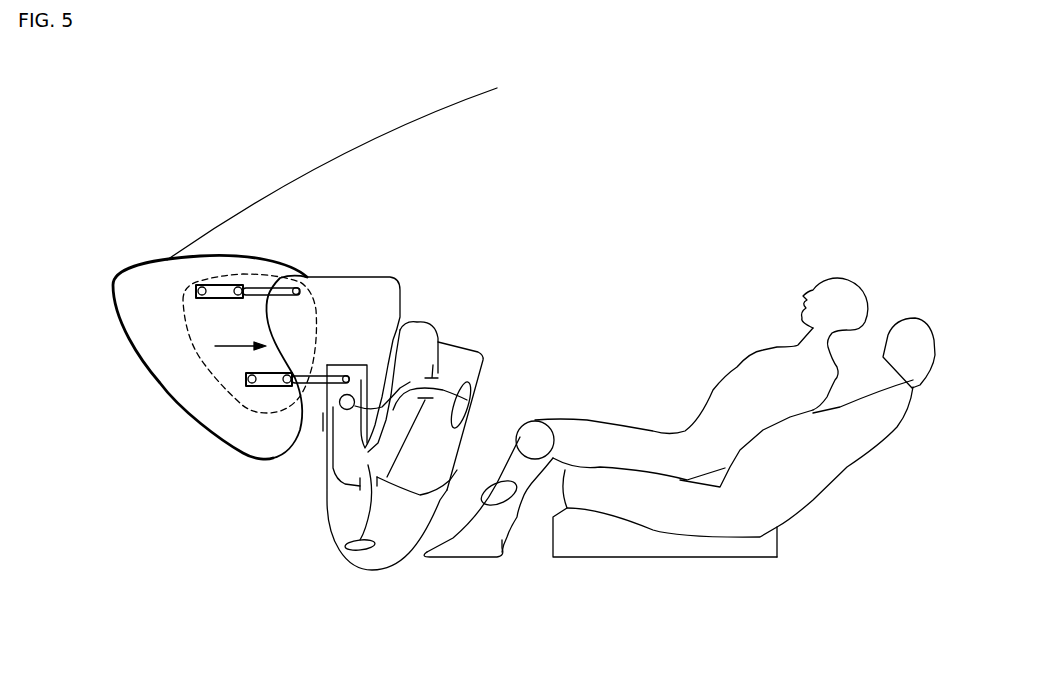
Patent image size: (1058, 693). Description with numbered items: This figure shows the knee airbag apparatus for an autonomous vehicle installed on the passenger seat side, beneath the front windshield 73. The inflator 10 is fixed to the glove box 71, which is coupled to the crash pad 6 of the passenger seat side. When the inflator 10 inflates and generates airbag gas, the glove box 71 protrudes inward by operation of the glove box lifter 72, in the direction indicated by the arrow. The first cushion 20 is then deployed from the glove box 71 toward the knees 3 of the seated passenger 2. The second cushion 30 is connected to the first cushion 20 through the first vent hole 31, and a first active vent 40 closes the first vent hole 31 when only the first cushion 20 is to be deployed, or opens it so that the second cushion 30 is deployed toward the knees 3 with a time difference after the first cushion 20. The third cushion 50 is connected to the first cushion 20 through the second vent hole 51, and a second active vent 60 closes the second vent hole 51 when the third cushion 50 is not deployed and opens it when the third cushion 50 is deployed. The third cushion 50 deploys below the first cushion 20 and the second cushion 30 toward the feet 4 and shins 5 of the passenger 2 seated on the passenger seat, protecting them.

The seated passenger 2 is at (762, 362).
The knees 3 is at (533, 443).
The feet 4 is at (477, 545).
The shins 5 is at (513, 507).
The crash pad 6 is at (115, 312).
The inflator 10 is at (340, 400).
The first cushion 20 is at (417, 323).
The second cushion 30 is at (457, 345).
The first vent hole 31 is at (438, 373).
The first active vent 40 is at (473, 398).
The third cushion 50 is at (387, 570).
The second vent hole 51 is at (358, 490).
The second active vent 60 is at (355, 550).
The glove box 71 is at (333, 275).
The glove box lifter 72 is at (226, 298).
The front windshield 73 is at (240, 207).